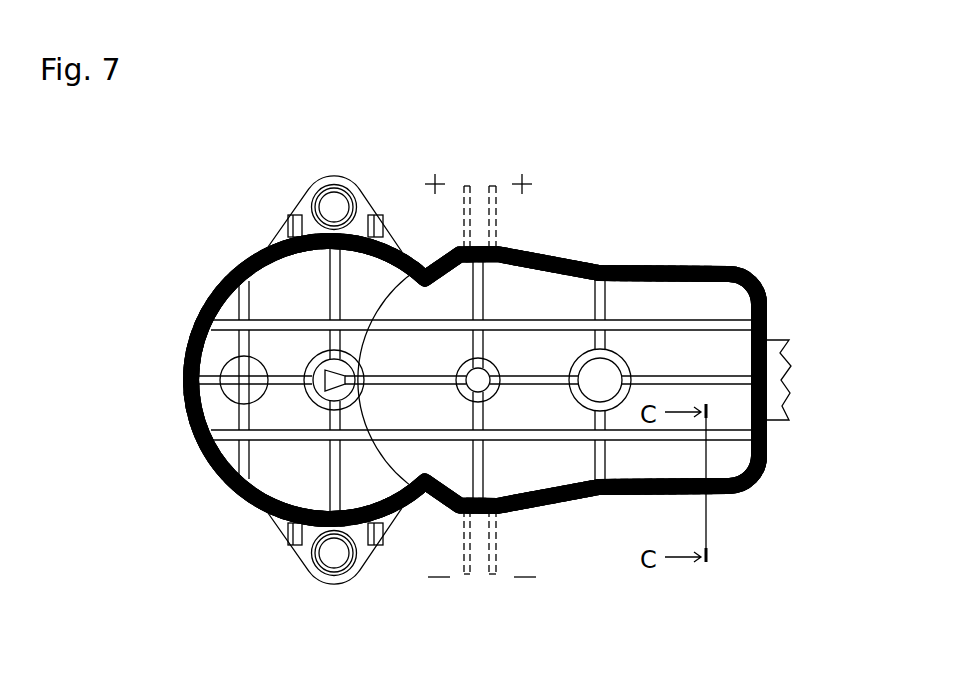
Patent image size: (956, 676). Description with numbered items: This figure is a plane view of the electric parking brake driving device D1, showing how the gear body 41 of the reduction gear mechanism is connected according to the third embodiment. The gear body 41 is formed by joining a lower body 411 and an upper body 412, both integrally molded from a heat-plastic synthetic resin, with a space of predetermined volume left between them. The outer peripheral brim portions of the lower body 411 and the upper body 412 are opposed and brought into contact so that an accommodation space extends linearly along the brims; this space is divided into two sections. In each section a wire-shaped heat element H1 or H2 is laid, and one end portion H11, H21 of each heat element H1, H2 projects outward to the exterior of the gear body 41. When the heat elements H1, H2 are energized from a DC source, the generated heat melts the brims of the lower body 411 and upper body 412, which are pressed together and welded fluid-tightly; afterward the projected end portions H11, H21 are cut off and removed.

The gear body 41 is at (475, 326).
The lower body 411 is at (682, 272).
The upper body 412 is at (693, 293).
The heat element H1 is at (186, 395).
The heat element H2 is at (768, 313).
The end portion of heat element H11 is at (466, 186).
The end portion of heat element H21 is at (491, 186).
The electric parking brake driving device D1 is at (200, 494).